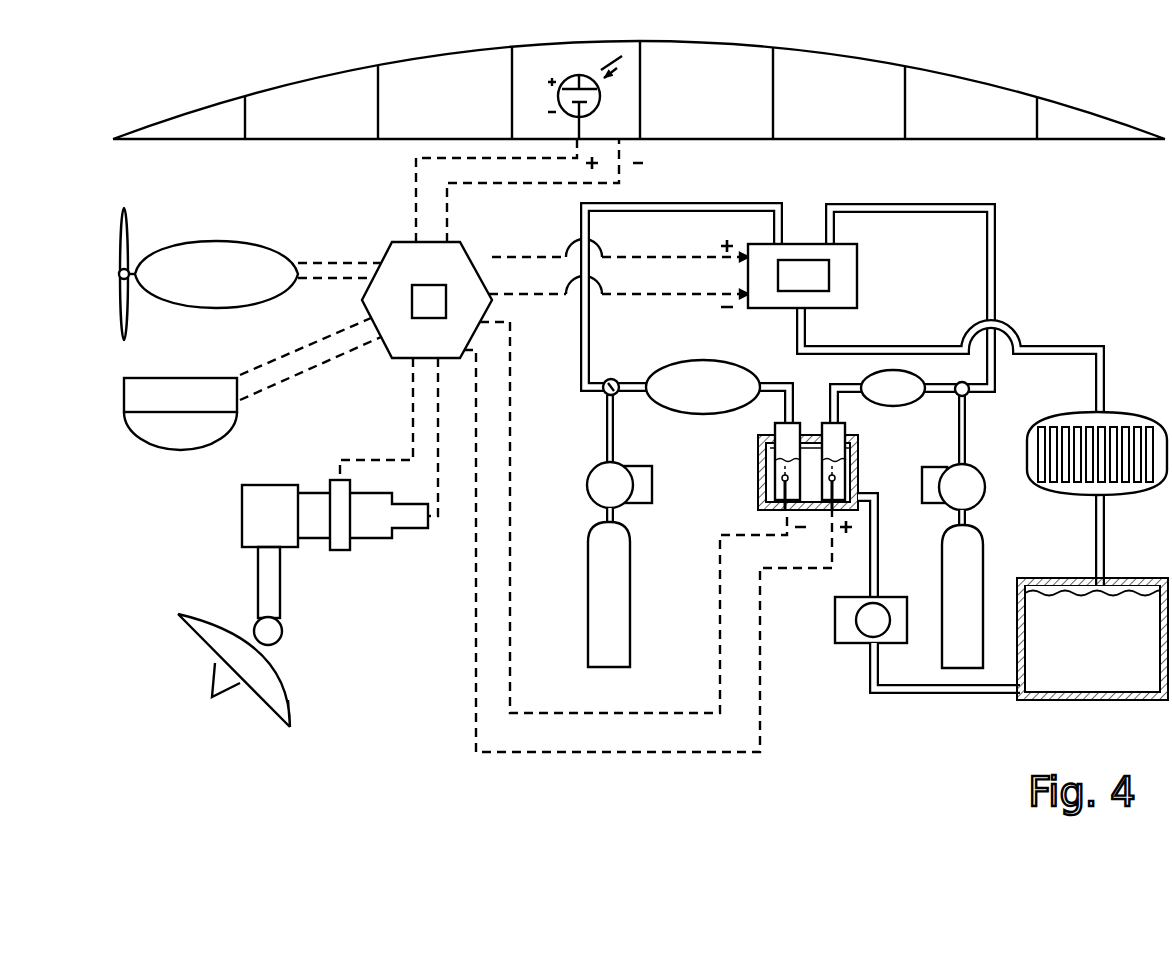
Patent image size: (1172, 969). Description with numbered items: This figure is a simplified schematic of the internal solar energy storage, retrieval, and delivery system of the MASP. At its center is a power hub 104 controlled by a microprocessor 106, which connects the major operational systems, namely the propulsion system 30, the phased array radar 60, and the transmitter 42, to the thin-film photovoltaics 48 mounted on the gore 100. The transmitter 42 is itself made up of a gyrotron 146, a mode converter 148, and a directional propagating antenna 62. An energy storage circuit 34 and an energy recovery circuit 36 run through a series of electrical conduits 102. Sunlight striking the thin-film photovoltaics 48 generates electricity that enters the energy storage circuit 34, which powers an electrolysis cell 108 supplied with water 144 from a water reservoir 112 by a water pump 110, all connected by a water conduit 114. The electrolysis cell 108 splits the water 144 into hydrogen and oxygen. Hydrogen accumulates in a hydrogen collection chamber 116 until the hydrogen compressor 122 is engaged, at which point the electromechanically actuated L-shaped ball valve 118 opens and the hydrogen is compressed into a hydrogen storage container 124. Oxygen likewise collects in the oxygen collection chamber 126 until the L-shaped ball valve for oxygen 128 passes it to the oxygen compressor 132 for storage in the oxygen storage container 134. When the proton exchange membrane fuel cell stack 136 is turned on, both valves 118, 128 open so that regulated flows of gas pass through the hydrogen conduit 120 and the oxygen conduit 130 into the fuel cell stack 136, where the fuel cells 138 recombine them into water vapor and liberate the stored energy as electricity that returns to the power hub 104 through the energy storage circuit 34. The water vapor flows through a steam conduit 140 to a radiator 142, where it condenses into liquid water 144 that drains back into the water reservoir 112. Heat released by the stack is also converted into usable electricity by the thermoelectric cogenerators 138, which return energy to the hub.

The propulsion system 30 is at (188, 285).
The energy storage circuit 34 is at (512, 413).
The energy recovery circuit 36 is at (688, 256).
The transmitter 42 is at (218, 548).
The thin-film photovoltaics 48 is at (571, 78).
The phased array radar 60 is at (165, 405).
The directional propagating antenna 62 is at (288, 680).
The gore 100 is at (683, 109).
The electrical conduits 102 is at (415, 218).
The power hub 104 is at (408, 275).
The microprocessor 106 is at (426, 308).
The electrolysis cell 108 is at (760, 466).
The water pump 110 is at (838, 623).
The water reservoir 112 is at (1075, 580).
The water conduit 114 is at (921, 694).
The hydrogen collection chamber 116 is at (684, 399).
The electromechanically actuated L-shaped ball valve for hydrogen 118 is at (613, 380).
The hydrogen conduit 120 is at (583, 227).
The hydrogen compressor 122 is at (600, 492).
The hydrogen storage container 124 is at (610, 592).
The oxygen collection chamber 126 is at (874, 400).
The electromechanically actuated L-shaped ball valve for oxygen 128 is at (968, 398).
The oxygen conduit 130 is at (997, 250).
The oxygen compressor 132 is at (932, 480).
The oxygen storage container 134 is at (955, 560).
The proton exchange membrane fuel cell stack 136 is at (815, 250).
The fuel cells 138 is at (805, 272).
The steam conduit 140 is at (930, 348).
The radiator 142 is at (1118, 414).
The water 144 is at (1069, 650).
The gyrotron 146 is at (251, 527).
The mode converter 148 is at (270, 590).